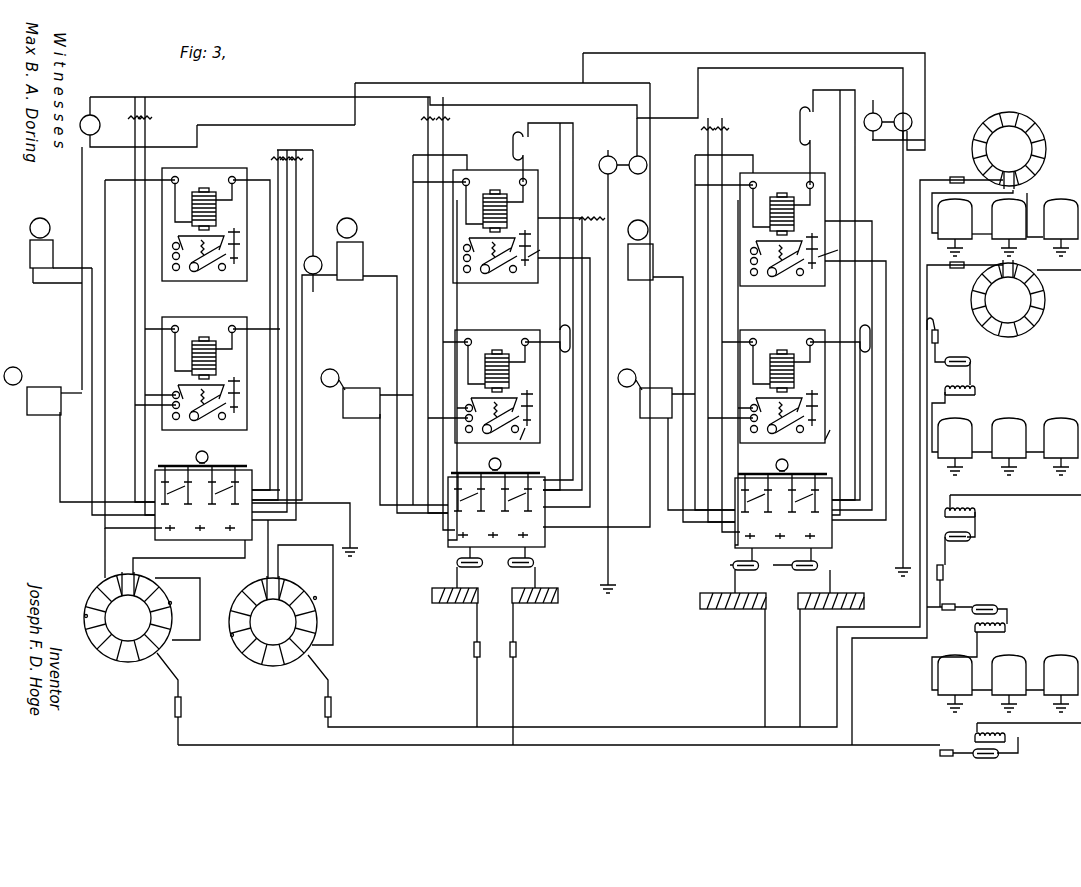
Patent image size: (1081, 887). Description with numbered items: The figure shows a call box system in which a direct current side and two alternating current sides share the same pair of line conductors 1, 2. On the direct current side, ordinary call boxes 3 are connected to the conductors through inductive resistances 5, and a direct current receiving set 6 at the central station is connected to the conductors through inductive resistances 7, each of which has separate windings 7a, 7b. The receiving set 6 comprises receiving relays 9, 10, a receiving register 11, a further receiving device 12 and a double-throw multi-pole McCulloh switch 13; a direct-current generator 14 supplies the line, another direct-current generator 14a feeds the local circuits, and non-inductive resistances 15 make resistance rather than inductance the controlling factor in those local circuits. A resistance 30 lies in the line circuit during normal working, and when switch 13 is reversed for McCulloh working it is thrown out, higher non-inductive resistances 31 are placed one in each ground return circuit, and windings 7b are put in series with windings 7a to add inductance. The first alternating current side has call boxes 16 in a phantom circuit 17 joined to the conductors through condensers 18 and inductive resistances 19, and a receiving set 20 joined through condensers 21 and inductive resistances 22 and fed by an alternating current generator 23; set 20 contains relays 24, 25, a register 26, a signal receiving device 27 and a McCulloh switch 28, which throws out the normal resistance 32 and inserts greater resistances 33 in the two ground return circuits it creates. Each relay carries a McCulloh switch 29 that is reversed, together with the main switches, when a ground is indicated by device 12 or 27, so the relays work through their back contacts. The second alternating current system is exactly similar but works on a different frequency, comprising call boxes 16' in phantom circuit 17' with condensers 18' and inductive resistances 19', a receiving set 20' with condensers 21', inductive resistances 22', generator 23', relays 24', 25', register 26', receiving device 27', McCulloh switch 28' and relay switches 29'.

The line conductor 1 is at (940, 168).
The line conductor 2 is at (938, 286).
The call box 3 is at (1060, 200).
The inductive resistance 5 is at (1008, 224).
The direct current receiving set 6 is at (97, 337).
The inductive resistance 7 is at (200, 619).
The winding 7a is at (232, 636).
The winding 7b is at (318, 590).
The receiving relay 9 is at (207, 373).
The receiving relay 10 is at (187, 329).
The receiving register 11 is at (43, 391).
The receiving device 12 is at (47, 250).
The double-throw multi-pole switch 13 is at (180, 535).
The direct-current generator 14 is at (317, 248).
The direct-current generator 14a is at (102, 122).
The non-inductive resistance 15 is at (152, 122).
The call box 16 is at (1008, 435).
The call box 16' is at (1008, 671).
The phantom circuit 17 is at (1015, 510).
The phantom circuit 17' is at (1029, 736).
The condenser 18 is at (964, 462).
The condenser 18' is at (972, 681).
The inductive resistance 19 is at (969, 449).
The inductive resistance 19' is at (985, 666).
The receiving set 20 is at (470, 318).
The receiving set 20' is at (777, 331).
The condenser 21 is at (499, 560).
The condenser 21' is at (784, 565).
The inductive resistance 22 is at (495, 656).
The inductive resistance 22' is at (782, 648).
The alternating current generator 23 is at (623, 355).
The alternating current generator 23' is at (888, 111).
The relay 24 is at (494, 403).
The relay 24' is at (784, 407).
The relay 25 is at (501, 315).
The relay 25' is at (790, 305).
The register 26 is at (350, 388).
The register 26' is at (676, 439).
The signal receiving device 27 is at (350, 350).
The signal receiving device 27' is at (676, 371).
The double-throw multi-pole McCulloh switch 28 is at (549, 315).
The double-throw multi-pole McCulloh switch 28' is at (830, 358).
The McCulloh switch 29 is at (537, 342).
The McCulloh switch 29' is at (838, 346).
The resistance 30 is at (276, 162).
The non-inductive resistance 31 is at (296, 150).
The resistance 32 is at (580, 218).
The resistance 33 is at (606, 218).